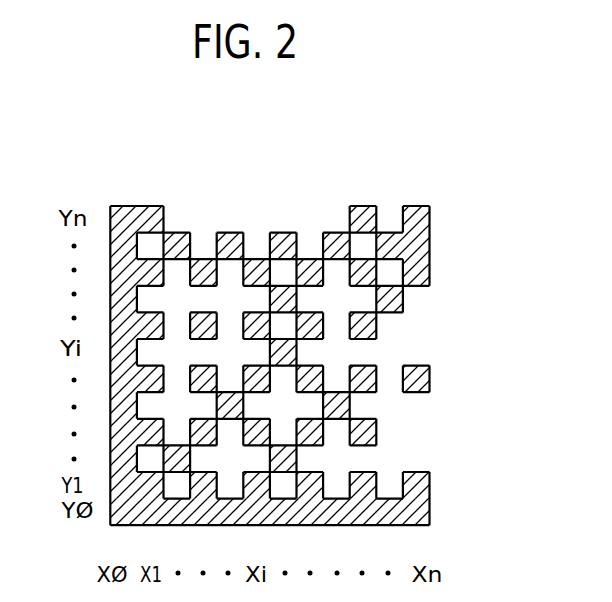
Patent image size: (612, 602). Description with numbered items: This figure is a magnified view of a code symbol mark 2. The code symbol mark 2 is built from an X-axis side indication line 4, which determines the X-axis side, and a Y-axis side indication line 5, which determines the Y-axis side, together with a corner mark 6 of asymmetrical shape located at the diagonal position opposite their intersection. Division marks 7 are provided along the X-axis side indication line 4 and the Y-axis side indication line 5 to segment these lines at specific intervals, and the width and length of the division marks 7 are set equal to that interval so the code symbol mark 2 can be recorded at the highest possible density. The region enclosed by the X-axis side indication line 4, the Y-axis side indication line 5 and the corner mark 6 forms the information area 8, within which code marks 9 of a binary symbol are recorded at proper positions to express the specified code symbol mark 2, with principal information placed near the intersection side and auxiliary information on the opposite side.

The code symbol mark 2 is at (198, 227).
The X-axis side indication line 4 is at (415, 526).
The Y-axis side indication line 5 is at (110, 222).
The corner mark 6 is at (430, 233).
The division marks 7 is at (150, 313).
The information area 8 is at (304, 238).
The code marks 9 is at (298, 351).